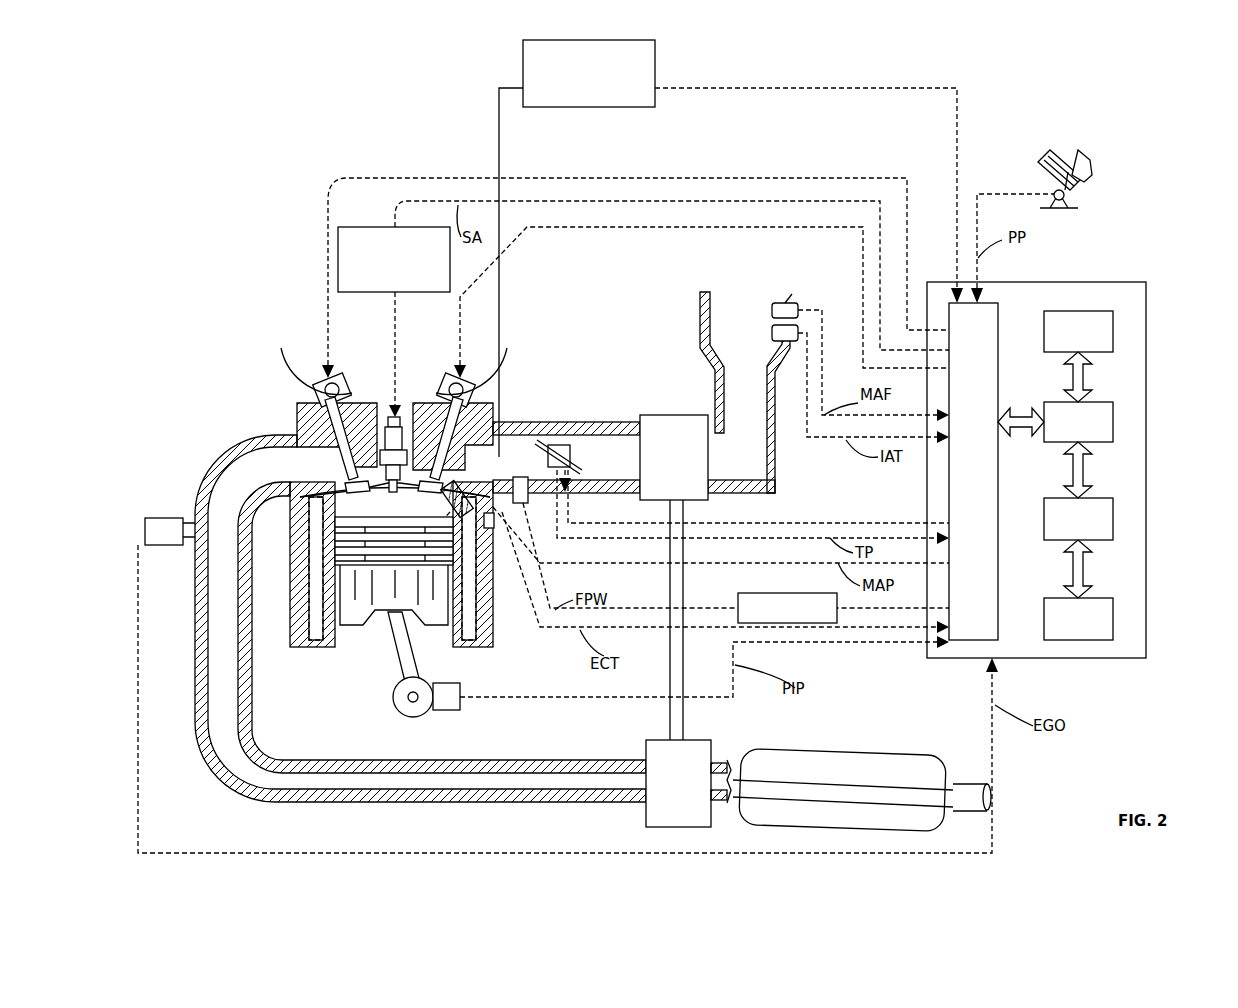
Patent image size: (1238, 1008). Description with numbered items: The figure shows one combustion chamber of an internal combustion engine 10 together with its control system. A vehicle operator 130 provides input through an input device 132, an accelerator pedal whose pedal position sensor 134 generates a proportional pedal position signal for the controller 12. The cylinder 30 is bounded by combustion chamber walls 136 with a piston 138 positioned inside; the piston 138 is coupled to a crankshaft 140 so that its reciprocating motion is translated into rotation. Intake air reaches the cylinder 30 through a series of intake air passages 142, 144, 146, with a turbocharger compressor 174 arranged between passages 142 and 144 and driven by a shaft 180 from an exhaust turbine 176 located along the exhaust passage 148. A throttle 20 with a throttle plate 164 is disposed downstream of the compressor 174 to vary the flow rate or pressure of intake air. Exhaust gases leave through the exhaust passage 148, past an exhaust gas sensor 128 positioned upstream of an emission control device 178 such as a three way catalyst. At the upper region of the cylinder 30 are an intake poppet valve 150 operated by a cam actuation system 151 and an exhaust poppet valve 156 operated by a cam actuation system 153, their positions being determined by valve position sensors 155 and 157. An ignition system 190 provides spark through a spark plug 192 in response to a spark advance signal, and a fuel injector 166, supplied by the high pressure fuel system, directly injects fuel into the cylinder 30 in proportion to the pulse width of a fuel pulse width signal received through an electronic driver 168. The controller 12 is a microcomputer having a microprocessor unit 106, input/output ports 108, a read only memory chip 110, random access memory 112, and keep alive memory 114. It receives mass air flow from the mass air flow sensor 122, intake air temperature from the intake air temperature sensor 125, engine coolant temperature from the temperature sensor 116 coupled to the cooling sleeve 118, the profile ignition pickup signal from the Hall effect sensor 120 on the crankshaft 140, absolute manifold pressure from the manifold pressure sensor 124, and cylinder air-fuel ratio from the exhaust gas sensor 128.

The engine 10 is at (128, 113).
The controller 12 is at (1075, 458).
The throttle 20 is at (658, 57).
The cylinder 30 is at (374, 520).
The microprocessor unit 106 is at (1113, 420).
The input/output ports 108 is at (1000, 310).
The read only memory chip 110 is at (1113, 330).
The random access memory 112 is at (1113, 520).
The keep alive memory 114 is at (1113, 620).
The temperature sensor 116 is at (492, 530).
The cooling sleeve 118 is at (494, 647).
The Hall effect sensor 120 is at (452, 712).
The mass air flow sensor 122 is at (860, 350).
The manifold pressure sensor 124 is at (557, 540).
The intake air temperature sensor 125 is at (784, 342).
The exhaust gas sensor 128 is at (145, 524).
The vehicle operator 130 is at (1078, 208).
The input device 132 is at (1040, 172).
The pedal position sensor 134 is at (1066, 195).
The combustion chamber walls 136 is at (322, 648).
The piston 138 is at (358, 630).
The crankshaft 140 is at (398, 715).
The intake air passage 142 is at (766, 336).
The intake air passage 144 is at (626, 466).
The intake air passage 146 is at (533, 466).
The exhaust passage 148 is at (284, 472).
The intake poppet valve 150 is at (398, 455).
The cam actuation system 151 is at (452, 380).
The cam actuation system 153 is at (338, 380).
The valve position sensor 155 is at (490, 395).
The exhaust poppet valve 156 is at (340, 470).
The valve position sensor 157 is at (312, 385).
The throttle plate 164 is at (540, 445).
The fuel injector 166 is at (484, 490).
The electronic driver 168 is at (738, 597).
The compressor 174 is at (658, 415).
The exhaust turbine 176 is at (646, 815).
The emission control device 178 is at (905, 757).
The shaft 180 is at (683, 710).
The ignition system 190 is at (352, 227).
The spark plug 192 is at (391, 417).